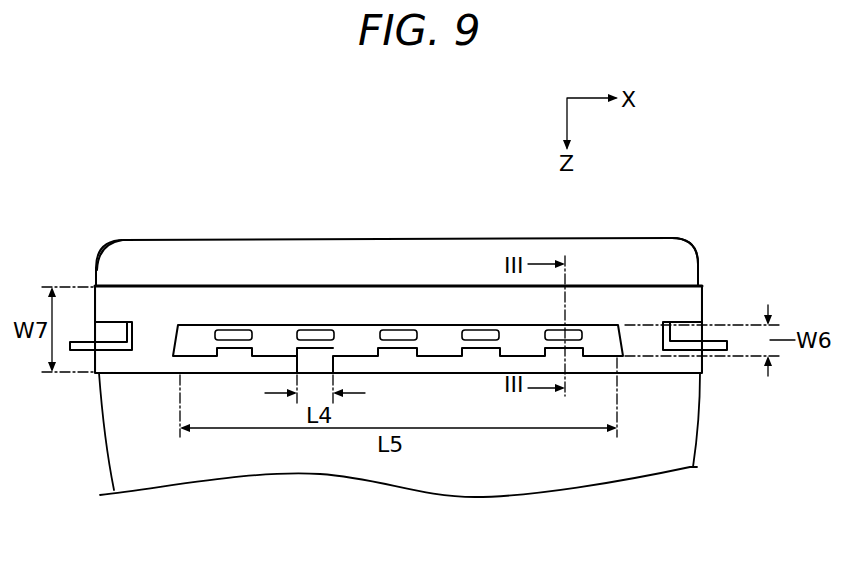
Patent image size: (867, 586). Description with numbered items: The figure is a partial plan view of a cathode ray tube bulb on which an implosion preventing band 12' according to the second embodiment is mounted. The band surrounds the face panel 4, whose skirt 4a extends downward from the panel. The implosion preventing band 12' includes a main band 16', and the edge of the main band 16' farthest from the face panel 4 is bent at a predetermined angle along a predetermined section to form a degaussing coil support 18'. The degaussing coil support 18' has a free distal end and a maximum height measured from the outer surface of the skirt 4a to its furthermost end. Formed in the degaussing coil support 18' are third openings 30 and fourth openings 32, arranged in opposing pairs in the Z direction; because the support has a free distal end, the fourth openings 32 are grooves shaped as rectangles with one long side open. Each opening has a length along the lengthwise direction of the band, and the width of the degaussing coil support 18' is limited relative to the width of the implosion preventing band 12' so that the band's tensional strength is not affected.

The face panel 4 is at (485, 238).
The skirt 4a is at (105, 268).
The implosion preventing band 12' is at (701, 250).
The main band 16' is at (398, 278).
The degaussing coil support 18' is at (373, 383).
The third openings 30 is at (398, 330).
The fourth openings 32 is at (485, 350).